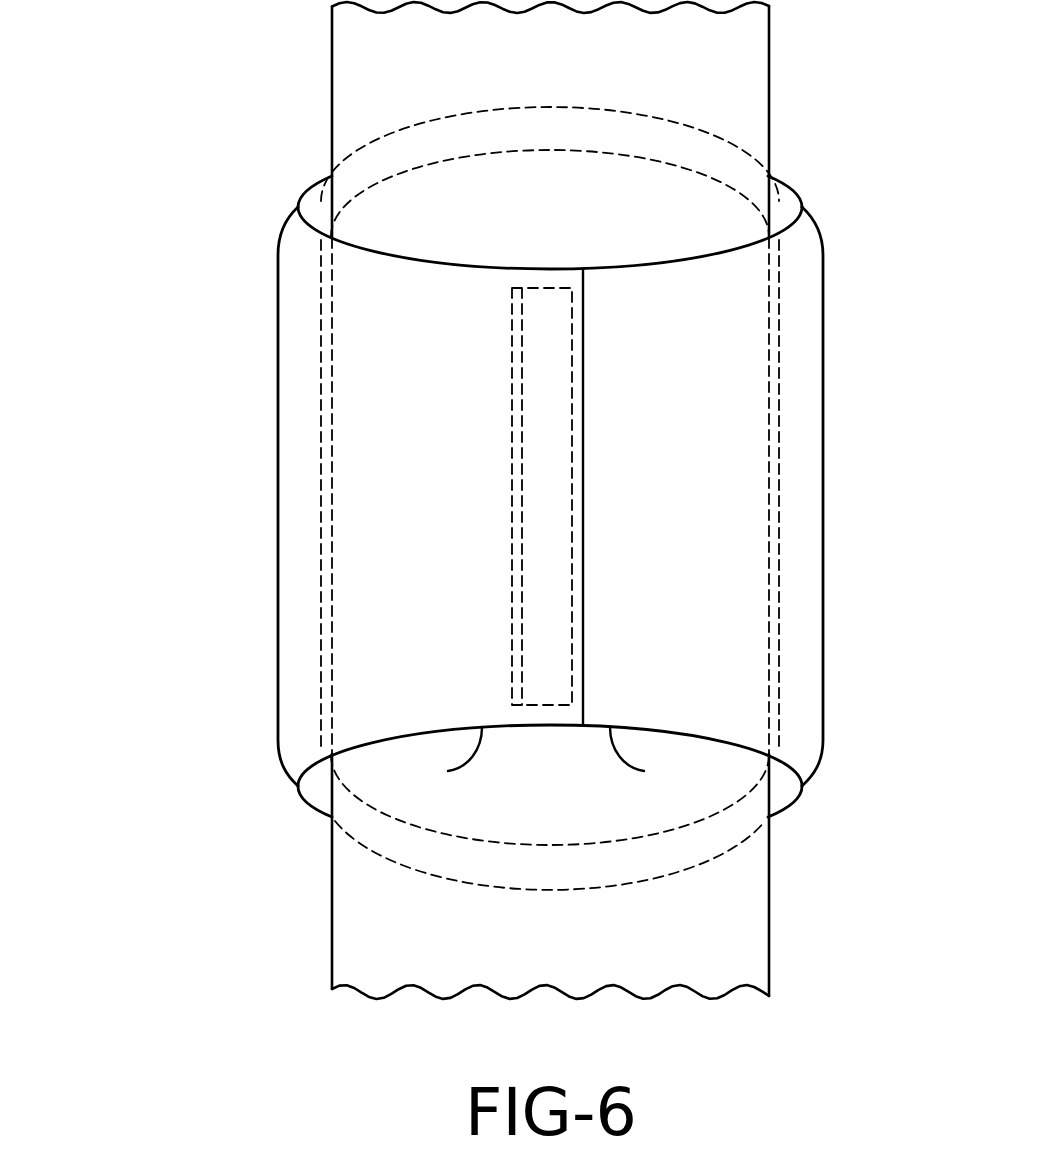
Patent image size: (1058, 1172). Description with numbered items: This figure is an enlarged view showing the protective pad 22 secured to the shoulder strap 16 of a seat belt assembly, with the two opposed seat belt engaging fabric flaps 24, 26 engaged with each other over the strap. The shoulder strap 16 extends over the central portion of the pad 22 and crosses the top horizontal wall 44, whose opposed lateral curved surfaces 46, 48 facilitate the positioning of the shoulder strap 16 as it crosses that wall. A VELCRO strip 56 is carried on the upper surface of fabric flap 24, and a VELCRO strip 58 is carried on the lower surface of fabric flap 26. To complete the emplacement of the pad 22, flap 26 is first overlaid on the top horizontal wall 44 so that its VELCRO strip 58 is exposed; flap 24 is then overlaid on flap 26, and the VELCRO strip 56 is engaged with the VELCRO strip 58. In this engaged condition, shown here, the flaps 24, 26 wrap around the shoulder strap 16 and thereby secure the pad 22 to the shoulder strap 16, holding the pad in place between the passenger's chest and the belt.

The shoulder strap 16 is at (332, 907).
The protective pad 22 is at (238, 210).
The fabric flap 24 is at (448, 771).
The fabric flap 26 is at (644, 771).
The top horizontal wall 44 is at (787, 202).
The lateral curved surface 46 is at (607, 887).
The lateral curved surface 48 is at (572, 107).
The VELCRO strip 56 is at (553, 493).
The VELCRO strip 58 is at (512, 492).